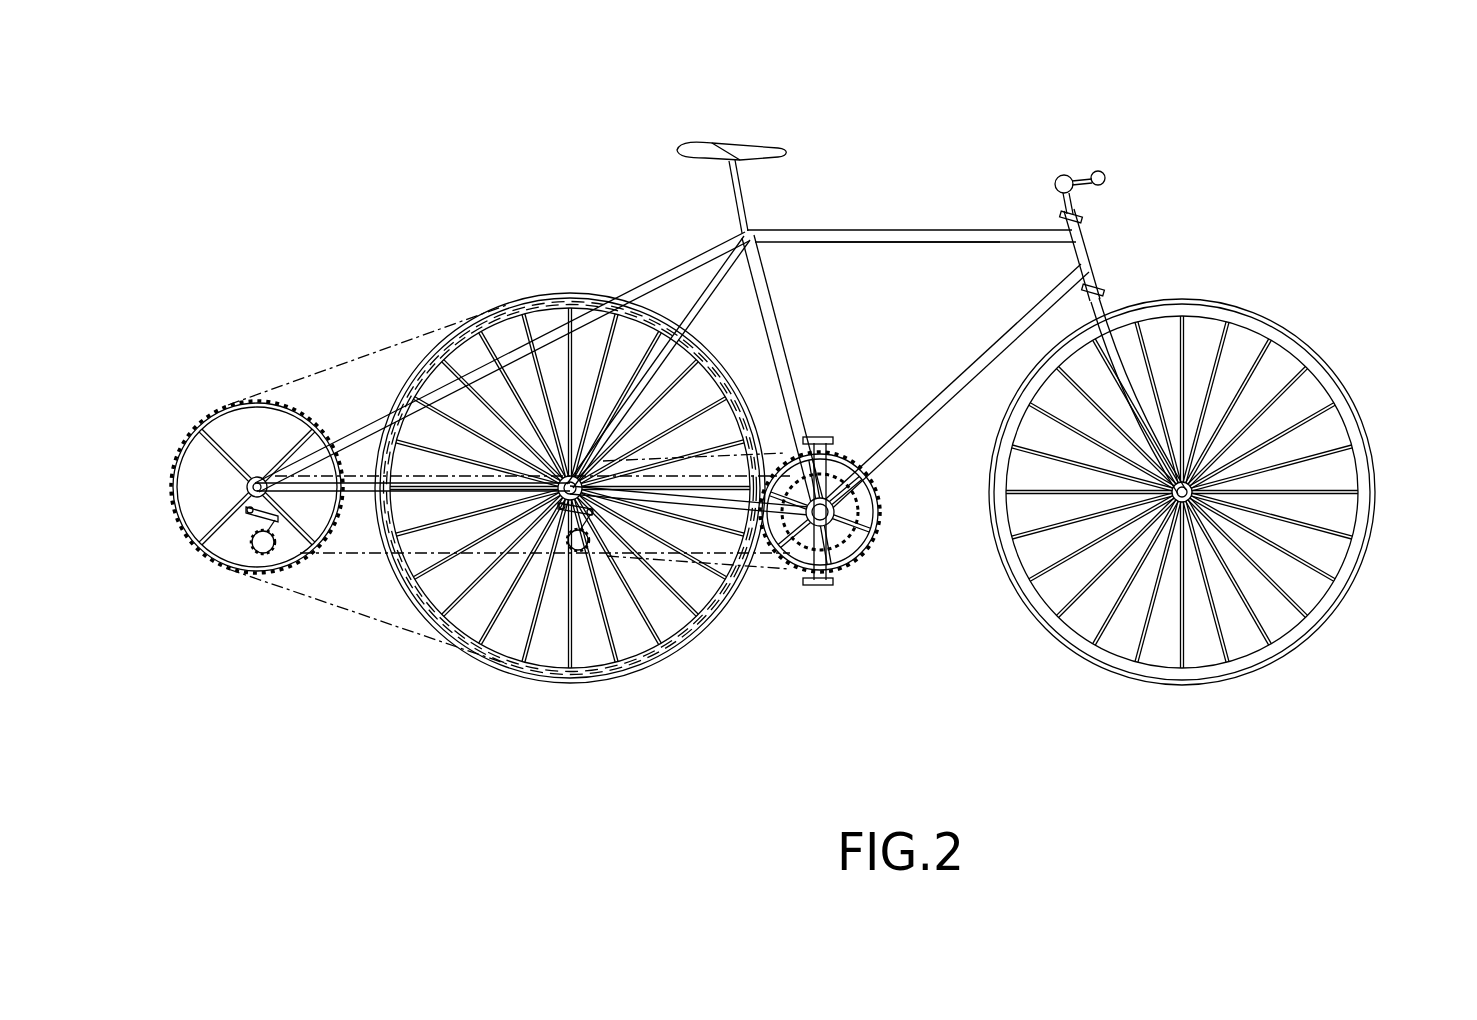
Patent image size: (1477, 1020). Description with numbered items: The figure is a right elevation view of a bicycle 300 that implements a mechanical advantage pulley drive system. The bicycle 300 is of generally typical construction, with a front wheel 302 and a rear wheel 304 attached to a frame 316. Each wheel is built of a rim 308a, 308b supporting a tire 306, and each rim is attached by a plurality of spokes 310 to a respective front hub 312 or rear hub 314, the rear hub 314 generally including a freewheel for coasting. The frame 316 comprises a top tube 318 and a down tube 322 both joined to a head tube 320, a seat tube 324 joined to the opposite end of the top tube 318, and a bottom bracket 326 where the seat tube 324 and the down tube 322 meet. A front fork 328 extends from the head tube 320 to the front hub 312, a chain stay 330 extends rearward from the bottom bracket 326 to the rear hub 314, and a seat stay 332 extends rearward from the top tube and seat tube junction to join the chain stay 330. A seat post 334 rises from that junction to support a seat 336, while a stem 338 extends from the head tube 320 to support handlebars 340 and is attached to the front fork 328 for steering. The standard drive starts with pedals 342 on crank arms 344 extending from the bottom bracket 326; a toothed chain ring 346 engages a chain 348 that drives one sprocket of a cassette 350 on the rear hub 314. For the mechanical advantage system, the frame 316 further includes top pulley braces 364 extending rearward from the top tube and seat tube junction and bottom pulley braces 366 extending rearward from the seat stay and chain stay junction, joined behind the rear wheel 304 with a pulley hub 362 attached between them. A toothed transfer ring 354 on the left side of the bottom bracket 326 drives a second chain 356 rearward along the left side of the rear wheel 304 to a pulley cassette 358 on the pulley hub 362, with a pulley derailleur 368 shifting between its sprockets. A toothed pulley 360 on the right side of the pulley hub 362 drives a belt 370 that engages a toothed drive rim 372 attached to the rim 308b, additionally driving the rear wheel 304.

The bicycle 300 is at (1218, 160).
The front wheel 302 is at (1375, 500).
The rear wheel 304 is at (510, 672).
The tire 306 is at (1348, 592).
The rim 308a is at (1300, 637).
The rim 308b is at (547, 673).
The spokes 310 is at (1340, 490).
The front hub 312 is at (1183, 505).
The rear hub 314 is at (560, 440).
The frame 316 is at (842, 232).
The top tube 318 is at (932, 242).
The head tube 320 is at (1095, 240).
The down tube 322 is at (975, 365).
The seat tube 324 is at (775, 302).
The bottom bracket 326 is at (825, 520).
The front fork 328 is at (1106, 290).
The chain stay 330 is at (757, 560).
The seat stay 332 is at (707, 293).
The seat post 334 is at (740, 190).
The seat 336 is at (770, 150).
The stem 338 is at (1082, 204).
The handlebars 340 is at (1100, 176).
The pedals 342 is at (822, 430).
The crank arms 344 is at (823, 460).
The chain ring 346 is at (880, 533).
The chain 348 is at (660, 555).
The cassette 350 is at (557, 530).
The transfer ring 354 is at (853, 507).
The second chain 356 is at (353, 553).
The pulley cassette 358 is at (270, 505).
The pulley 360 is at (198, 430).
The pulley hub 362 is at (262, 460).
The top pulley braces 364 is at (657, 280).
The bottom pulley braces 366 is at (320, 553).
The pulley derailleur 368 is at (260, 548).
The belt 370 is at (355, 612).
The drive rim 372 is at (557, 672).